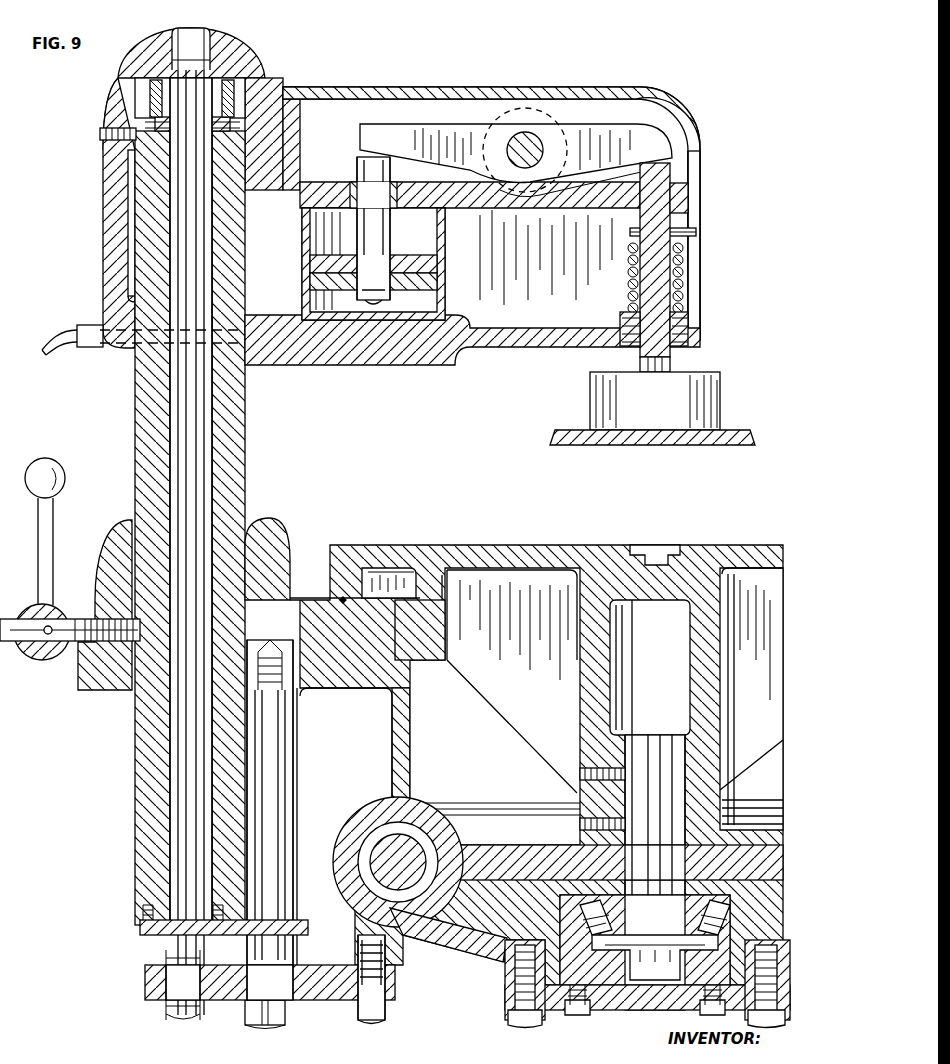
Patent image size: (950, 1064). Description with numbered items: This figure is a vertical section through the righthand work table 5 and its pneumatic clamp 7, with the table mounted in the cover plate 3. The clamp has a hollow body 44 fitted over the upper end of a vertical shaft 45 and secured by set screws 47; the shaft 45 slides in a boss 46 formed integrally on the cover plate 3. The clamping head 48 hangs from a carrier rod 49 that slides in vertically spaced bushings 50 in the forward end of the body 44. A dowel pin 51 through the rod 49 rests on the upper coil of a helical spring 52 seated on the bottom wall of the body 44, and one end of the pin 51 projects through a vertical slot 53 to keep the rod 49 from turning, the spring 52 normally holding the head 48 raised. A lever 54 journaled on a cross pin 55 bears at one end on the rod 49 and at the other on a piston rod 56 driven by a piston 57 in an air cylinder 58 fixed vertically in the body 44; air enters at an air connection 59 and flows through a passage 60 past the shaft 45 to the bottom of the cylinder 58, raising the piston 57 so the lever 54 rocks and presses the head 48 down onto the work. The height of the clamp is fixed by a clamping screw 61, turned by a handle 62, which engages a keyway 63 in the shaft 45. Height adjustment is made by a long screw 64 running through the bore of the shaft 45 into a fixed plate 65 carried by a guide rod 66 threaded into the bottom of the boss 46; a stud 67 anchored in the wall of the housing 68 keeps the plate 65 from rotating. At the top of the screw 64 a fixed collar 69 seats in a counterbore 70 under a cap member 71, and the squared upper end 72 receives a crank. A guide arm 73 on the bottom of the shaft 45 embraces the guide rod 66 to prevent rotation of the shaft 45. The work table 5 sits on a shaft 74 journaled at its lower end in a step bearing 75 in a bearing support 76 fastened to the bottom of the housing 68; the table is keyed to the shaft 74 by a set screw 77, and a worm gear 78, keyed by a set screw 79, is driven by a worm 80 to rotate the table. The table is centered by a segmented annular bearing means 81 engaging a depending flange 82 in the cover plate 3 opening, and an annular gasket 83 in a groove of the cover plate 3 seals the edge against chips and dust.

The cover plate 3 is at (332, 692).
The work table 5 is at (440, 545).
The pneumatic clamp 7 is at (705, 166).
The hollow body 44 is at (418, 355).
The vertical shaft 45 is at (246, 444).
The boss 46 is at (257, 538).
The set screw 47 is at (105, 133).
The clamping head 48 is at (722, 402).
The carrier rod 49 is at (672, 362).
The bushings 50 is at (689, 196).
The dowel pin 51 is at (697, 230).
The helical spring 52 is at (688, 255).
The vertical slot 53 is at (694, 267).
The lever 54 is at (585, 138).
The cross pin 55 is at (535, 140).
The piston rod 56 is at (358, 165).
The piston 57 is at (437, 262).
The air cylinder 58 is at (302, 240).
The air connection 59 is at (60, 335).
The passage 60 is at (277, 366).
The clamping screw 61 is at (80, 618).
The handle 62 is at (55, 520).
The keyway 63 is at (135, 505).
The long screw 64 is at (178, 740).
The fixed plate 65 is at (230, 1000).
The guide rod 66 is at (293, 820).
The stud 67 is at (372, 1025).
The housing 68 is at (450, 940).
The fixed collar 69 is at (160, 140).
The counterbore 70 is at (232, 118).
The cap member 71 is at (250, 60).
The upper end of the screw 72 is at (205, 30).
The guide arm 73 is at (298, 924).
The shaft 74 is at (668, 750).
The step bearing 75 is at (722, 900).
The bearing support 76 is at (548, 1012).
The set screw 77 is at (585, 770).
The worm gear 78 is at (496, 856).
The set screw 79 is at (580, 822).
The worm 80 is at (410, 835).
The annular bearing means 81 is at (420, 623).
The depending flange 82 is at (440, 635).
The annular gasket 83 is at (340, 600).